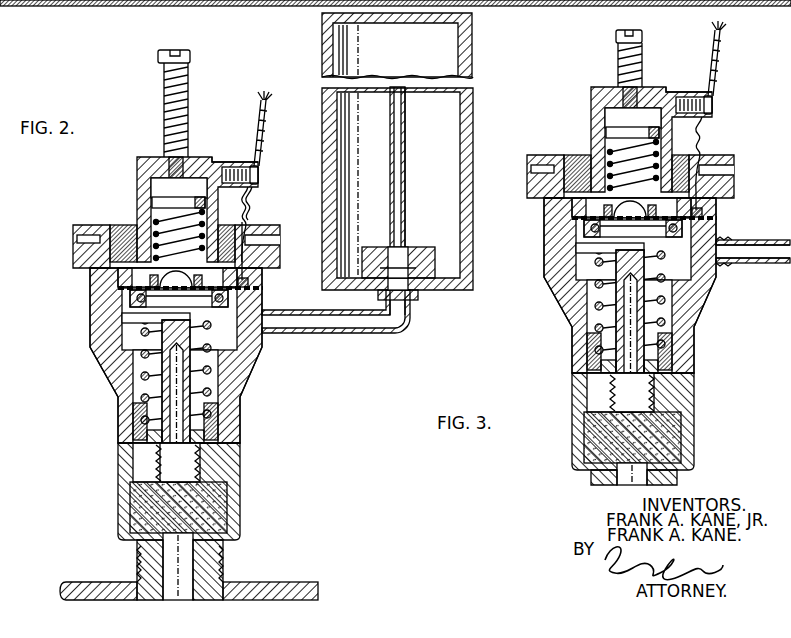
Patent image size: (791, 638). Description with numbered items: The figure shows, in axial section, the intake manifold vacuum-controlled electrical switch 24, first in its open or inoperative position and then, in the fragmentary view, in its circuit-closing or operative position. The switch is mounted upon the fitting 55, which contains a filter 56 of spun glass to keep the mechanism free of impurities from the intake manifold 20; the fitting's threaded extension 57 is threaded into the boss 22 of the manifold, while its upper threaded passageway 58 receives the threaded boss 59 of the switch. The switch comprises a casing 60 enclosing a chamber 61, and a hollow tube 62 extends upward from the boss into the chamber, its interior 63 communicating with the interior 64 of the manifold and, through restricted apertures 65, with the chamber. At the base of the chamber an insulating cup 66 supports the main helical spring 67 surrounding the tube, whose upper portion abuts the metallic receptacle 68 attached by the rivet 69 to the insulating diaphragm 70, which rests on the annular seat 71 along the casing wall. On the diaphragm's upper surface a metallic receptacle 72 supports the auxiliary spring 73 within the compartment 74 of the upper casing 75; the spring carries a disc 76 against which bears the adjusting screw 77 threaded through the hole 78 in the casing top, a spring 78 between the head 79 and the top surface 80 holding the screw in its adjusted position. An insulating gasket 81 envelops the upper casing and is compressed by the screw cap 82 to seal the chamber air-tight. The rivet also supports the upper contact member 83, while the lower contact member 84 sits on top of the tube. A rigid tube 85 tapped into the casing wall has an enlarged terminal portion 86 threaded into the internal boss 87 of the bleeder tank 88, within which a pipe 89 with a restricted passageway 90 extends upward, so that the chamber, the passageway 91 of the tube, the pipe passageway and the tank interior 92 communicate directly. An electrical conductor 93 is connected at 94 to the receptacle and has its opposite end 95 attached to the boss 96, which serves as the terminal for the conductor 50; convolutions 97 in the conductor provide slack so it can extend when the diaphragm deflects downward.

In FIG. 2, the intake manifold 20 is at (298, 582).
In FIG. 2, the boss 22 is at (137, 565).
In FIG. 3, the boss 22 is at (615, 484).
In FIG. 2, the intake manifold vacuum-controlled electrical switch 24 is at (265, 365).
In FIG. 3, the intake manifold vacuum-controlled electrical switch 24 is at (648, 285).
In FIG. 2, the conductor 50 is at (264, 133).
In FIG. 3, the conductor 50 is at (730, 58).
In FIG. 2, the fitting 55 is at (236, 462).
In FIG. 3, the fitting 55 is at (654, 421).
In FIG. 2, the filter 56 is at (225, 496).
In FIG. 3, the filter 56 is at (659, 437).
In FIG. 2, the threaded extension 57 is at (222, 560).
In FIG. 2, the upper threaded passageway 58 is at (155, 462).
In FIG. 2, the threaded boss 59 is at (158, 472).
In FIG. 2, the casing 60 is at (95, 330).
In FIG. 3, the casing 60 is at (613, 285).
In FIG. 2, the chamber 61 is at (125, 350).
In FIG. 3, the chamber 61 is at (605, 264).
In FIG. 2, the hollow tube 62 is at (192, 390).
In FIG. 3, the hollow tube 62 is at (675, 331).
In FIG. 2, the interior of tube 63 is at (143, 398).
In FIG. 3, the interior of tube 63 is at (665, 305).
In FIG. 2, the interior of intake manifold 64 is at (174, 582).
In FIG. 3, the interior of intake manifold 64 is at (632, 474).
In FIG. 2, the restricted apertures 65 is at (205, 425).
In FIG. 3, the restricted apertures 65 is at (599, 344).
In FIG. 2, the insulating cup 66 is at (135, 425).
In FIG. 3, the insulating cup 66 is at (605, 351).
In FIG. 2, the main helical spring 67 is at (242, 357).
In FIG. 3, the main helical spring 67 is at (658, 326).
In FIG. 2, the metallic receptacle 68 is at (130, 300).
In FIG. 3, the metallic receptacle 68 is at (597, 242).
In FIG. 2, the rivet 69 is at (120, 287).
In FIG. 3, the rivet 69 is at (644, 204).
In FIG. 2, the insulating diaphragm 70 is at (205, 282).
In FIG. 3, the insulating diaphragm 70 is at (587, 224).
In FIG. 2, the annular seat 71 is at (237, 300).
In FIG. 3, the annular seat 71 is at (663, 220).
In FIG. 2, the metallic receptacle 72 is at (118, 280).
In FIG. 3, the metallic receptacle 72 is at (605, 213).
In FIG. 2, the auxiliary spring 73 is at (153, 222).
In FIG. 3, the auxiliary spring 73 is at (635, 149).
In FIG. 2, the compartment 74 is at (160, 185).
In FIG. 3, the compartment 74 is at (633, 118).
In FIG. 2, the upper casing 75 is at (140, 162).
In FIG. 3, the upper casing 75 is at (639, 137).
In FIG. 2, the disc 76 is at (152, 202).
In FIG. 3, the disc 76 is at (612, 125).
In FIG. 2, the adjusting screw 77 is at (188, 100).
In FIG. 3, the adjusting screw 77 is at (646, 76).
In FIG. 2, the spring 78 is at (163, 90).
In FIG. 3, the spring 78 is at (619, 62).
In FIG. 2, the head 79 is at (188, 57).
In FIG. 2, the top surface 80 is at (212, 150).
In FIG. 3, the top surface 80 is at (686, 75).
In FIG. 2, the insulating gasket 81 is at (112, 228).
In FIG. 3, the insulating gasket 81 is at (617, 159).
In FIG. 2, the screw cap 82 is at (80, 243).
In FIG. 3, the screw cap 82 is at (617, 171).
In FIG. 2, the upper contact member 83 is at (190, 318).
In FIG. 3, the upper contact member 83 is at (610, 257).
In FIG. 2, the lower contact member 84 is at (145, 324).
In FIG. 3, the lower contact member 84 is at (639, 248).
In FIG. 2, the rigid tube 85 is at (357, 333).
In FIG. 3, the rigid tube 85 is at (753, 261).
In FIG. 2, the terminal portion 86 is at (418, 294).
In FIG. 2, the internal boss 87 is at (368, 247).
In FIG. 2, the bleeder tank 88 is at (472, 118).
In FIG. 2, the pipe 89 is at (406, 210).
In FIG. 2, the restricted passageway 90 is at (394, 145).
In FIG. 2, the passageway 91 is at (393, 333).
In FIG. 3, the passageway 91 is at (753, 238).
In FIG. 2, the interior of tank 92 is at (462, 51).
In FIG. 2, the electrical conductor 93 is at (243, 224).
In FIG. 2, the connection point 94 is at (249, 282).
In FIG. 3, the connection point 94 is at (720, 206).
In FIG. 2, the opposite end 95 is at (249, 190).
In FIG. 3, the opposite end 95 is at (704, 163).
In FIG. 2, the boss 96 is at (243, 167).
In FIG. 3, the boss 96 is at (694, 86).
In FIG. 2, the convolutions 97 is at (249, 205).